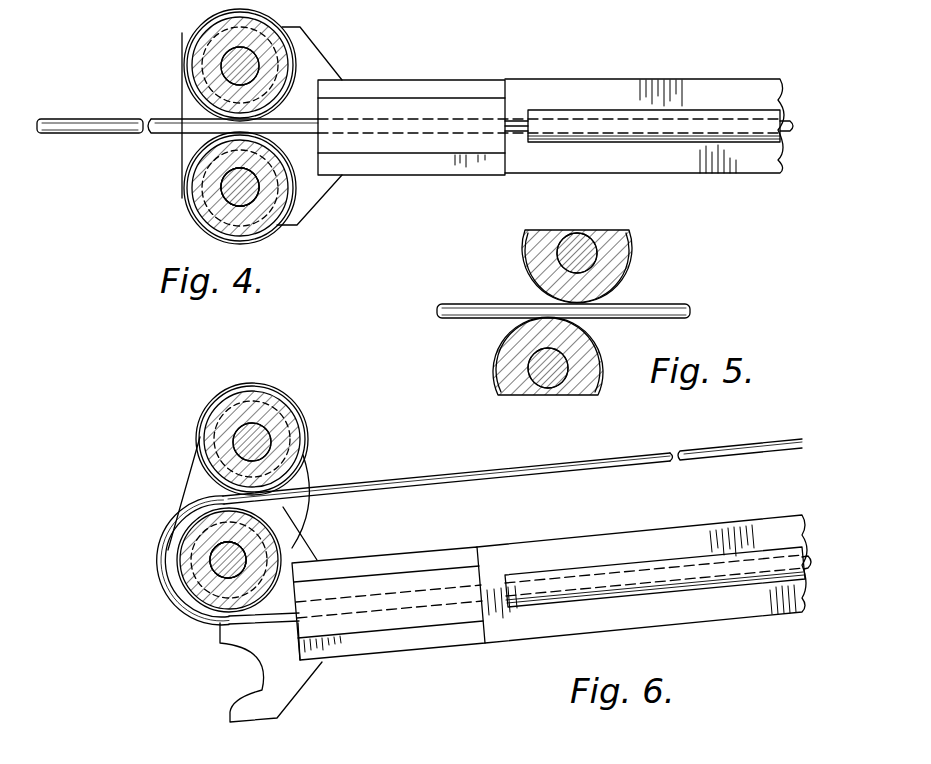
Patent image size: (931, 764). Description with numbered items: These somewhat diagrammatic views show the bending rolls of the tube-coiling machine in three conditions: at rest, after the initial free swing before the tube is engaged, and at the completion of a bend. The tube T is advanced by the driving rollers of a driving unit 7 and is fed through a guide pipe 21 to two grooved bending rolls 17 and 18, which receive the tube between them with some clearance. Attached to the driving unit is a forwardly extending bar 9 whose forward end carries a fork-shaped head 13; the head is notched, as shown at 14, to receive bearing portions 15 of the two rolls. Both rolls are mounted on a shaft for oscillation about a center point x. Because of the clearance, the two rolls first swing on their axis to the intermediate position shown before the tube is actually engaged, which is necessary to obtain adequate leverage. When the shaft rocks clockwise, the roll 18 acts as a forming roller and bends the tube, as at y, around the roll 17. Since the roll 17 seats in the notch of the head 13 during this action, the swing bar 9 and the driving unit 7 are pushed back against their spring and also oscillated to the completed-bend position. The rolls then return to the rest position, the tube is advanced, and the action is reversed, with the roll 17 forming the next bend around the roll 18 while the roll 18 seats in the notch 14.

In FIG. 4, the bar 9 is at (730, 166).
In FIG. 6, the bar 9 is at (688, 623).
In FIG. 4, the fork-shaped head 13 is at (324, 64).
In FIG. 6, the fork-shaped head 13 is at (388, 603).
In FIG. 4, the notch 14 is at (300, 45).
In FIG. 6, the notch 14 is at (258, 692).
In FIG. 4, the bearing portions 15 is at (205, 23).
In FIG. 6, the bearing portions 15 is at (298, 414).
In FIG. 4, the bending roll 17 is at (188, 50).
In FIG. 5, the bending roll 17 is at (632, 265).
In FIG. 6, the bending roll 17 is at (196, 596).
In FIG. 4, the bending roll 18 is at (192, 214).
In FIG. 5, the bending roll 18 is at (600, 340).
In FIG. 6, the bending roll 18 is at (216, 403).
In FIG. 4, the guide pipe 21 is at (570, 113).
In FIG. 6, the guide pipe 21 is at (592, 590).
In FIG. 4, the tube T is at (70, 122).
In FIG. 5, the tube T is at (563, 311).
In FIG. 4, the center point X is at (274, 118).
In FIG. 6, the center point X is at (213, 490).
In FIG. 6, the bend Y is at (166, 573).
In FIG. 6, the driving unit 7 is at (772, 500).